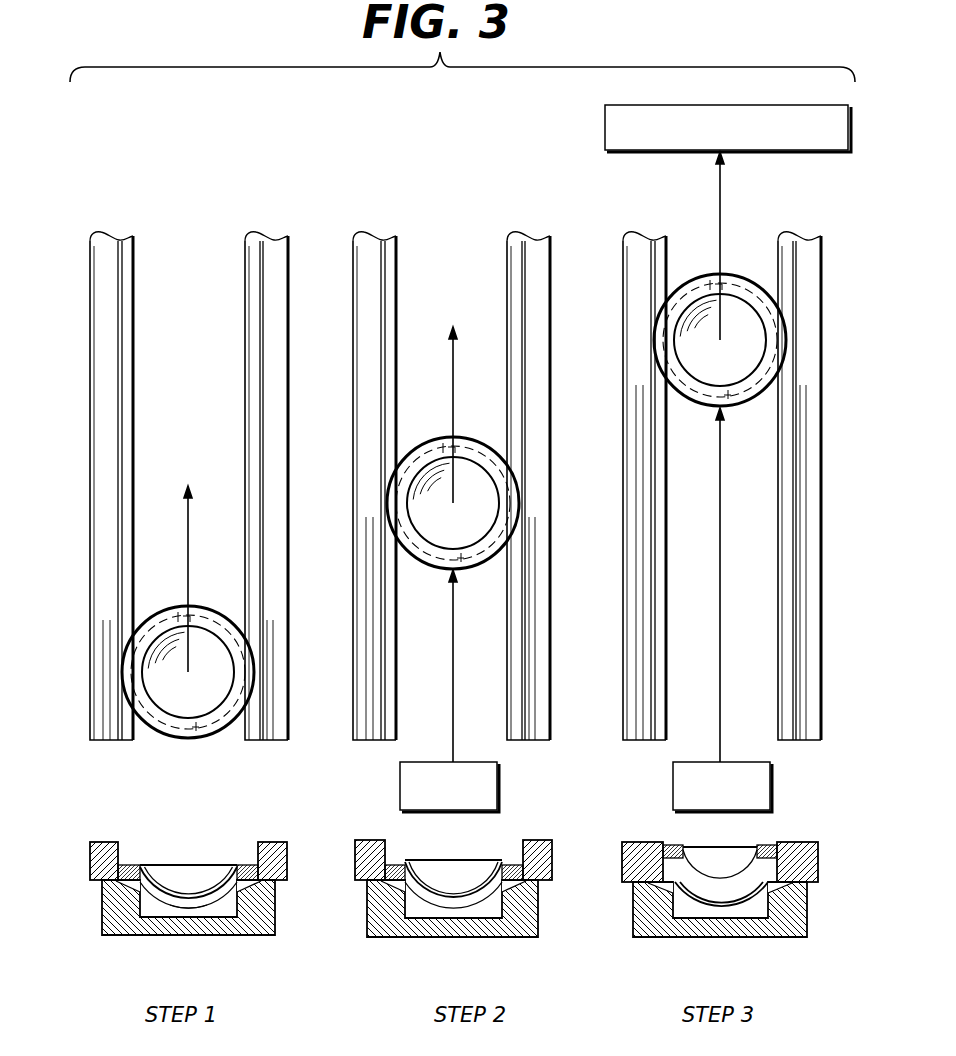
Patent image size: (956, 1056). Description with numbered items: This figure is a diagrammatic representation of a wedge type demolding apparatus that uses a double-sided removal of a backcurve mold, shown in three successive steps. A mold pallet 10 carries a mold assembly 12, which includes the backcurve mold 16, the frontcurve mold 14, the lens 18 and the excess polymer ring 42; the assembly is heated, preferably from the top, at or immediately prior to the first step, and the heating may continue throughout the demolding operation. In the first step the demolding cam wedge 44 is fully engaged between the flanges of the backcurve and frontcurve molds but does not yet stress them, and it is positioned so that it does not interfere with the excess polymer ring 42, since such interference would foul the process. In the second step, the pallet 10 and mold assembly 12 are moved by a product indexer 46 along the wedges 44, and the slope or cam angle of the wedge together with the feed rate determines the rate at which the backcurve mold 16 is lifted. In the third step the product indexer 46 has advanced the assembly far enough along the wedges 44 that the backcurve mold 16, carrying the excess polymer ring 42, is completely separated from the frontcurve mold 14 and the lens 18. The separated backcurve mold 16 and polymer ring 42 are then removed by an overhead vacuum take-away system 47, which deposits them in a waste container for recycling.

The mold pallet 10 is at (260, 936).
The mold assembly 12 is at (174, 702).
The frontcurve mold 14 is at (175, 908).
The backcurve mold 16 is at (177, 892).
The lens 18 is at (200, 910).
The excess polymer ring 42 is at (127, 877).
The demolding cam wedge 44 is at (247, 872).
The product indexer 46 is at (497, 788).
The vacuum take-away system 47 is at (605, 129).